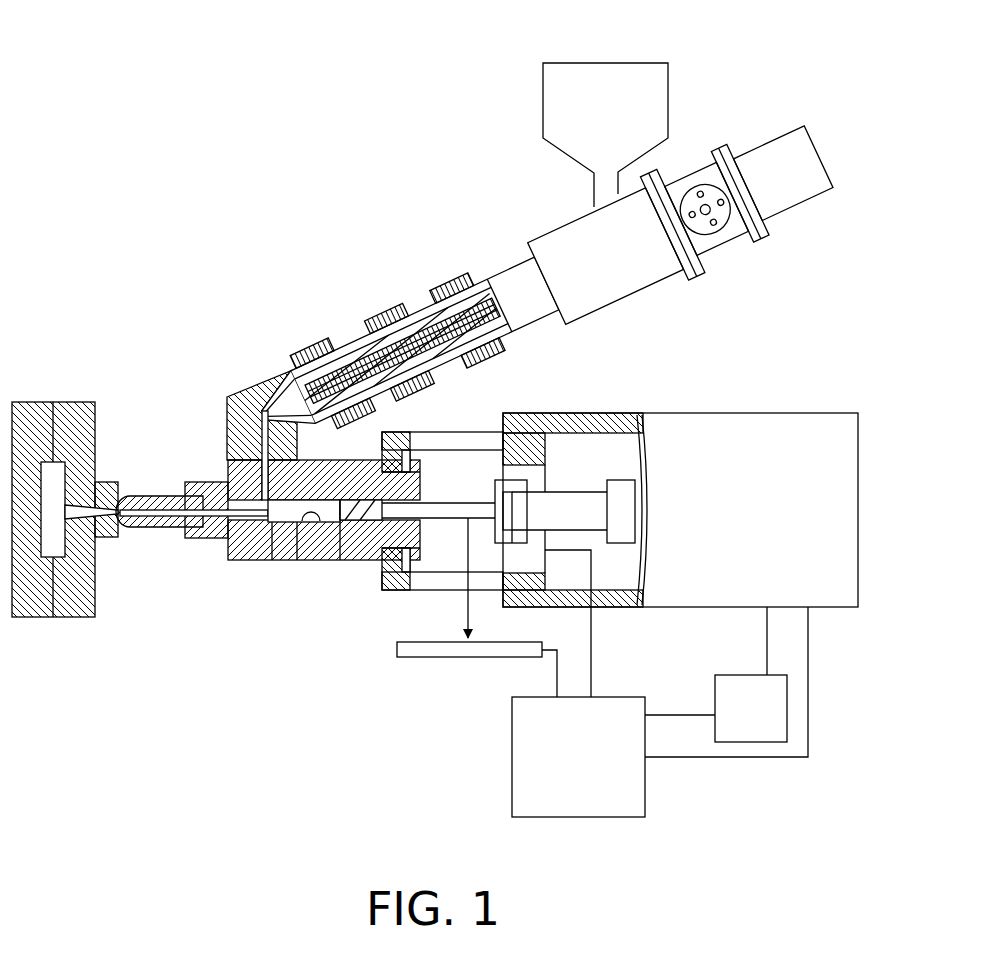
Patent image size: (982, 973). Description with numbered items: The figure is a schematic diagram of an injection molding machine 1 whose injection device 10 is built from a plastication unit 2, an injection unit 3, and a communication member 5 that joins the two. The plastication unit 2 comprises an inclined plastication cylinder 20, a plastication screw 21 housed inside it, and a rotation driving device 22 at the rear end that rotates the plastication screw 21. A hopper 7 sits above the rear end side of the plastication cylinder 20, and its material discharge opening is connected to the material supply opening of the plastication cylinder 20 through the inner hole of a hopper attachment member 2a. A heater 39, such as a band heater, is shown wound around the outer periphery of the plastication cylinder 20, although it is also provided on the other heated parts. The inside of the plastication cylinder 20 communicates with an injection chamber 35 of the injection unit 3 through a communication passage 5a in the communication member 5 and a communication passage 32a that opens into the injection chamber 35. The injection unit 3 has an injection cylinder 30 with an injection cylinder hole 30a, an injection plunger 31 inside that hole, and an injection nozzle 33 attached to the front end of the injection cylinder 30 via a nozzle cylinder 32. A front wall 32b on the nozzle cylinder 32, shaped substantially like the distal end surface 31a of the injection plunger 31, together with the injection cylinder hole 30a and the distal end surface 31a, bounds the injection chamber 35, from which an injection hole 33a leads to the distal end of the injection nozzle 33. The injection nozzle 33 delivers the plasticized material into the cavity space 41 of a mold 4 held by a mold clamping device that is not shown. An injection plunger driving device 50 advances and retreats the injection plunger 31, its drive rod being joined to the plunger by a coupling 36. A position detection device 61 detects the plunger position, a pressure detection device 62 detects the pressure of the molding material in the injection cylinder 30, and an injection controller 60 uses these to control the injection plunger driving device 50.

The injection molding machine 1 is at (803, 75).
The plastication unit 2 is at (408, 300).
The hopper attachment member 2a is at (620, 288).
The injection unit 3 is at (273, 643).
The mold 4 is at (57, 396).
The communication member 5 is at (250, 395).
The communication passage 5a is at (258, 430).
The hopper 7 is at (660, 80).
The injection device 10 is at (190, 308).
The plastication cylinder 20 is at (337, 340).
The plastication screw 21 is at (360, 347).
The rotation driving device 22 is at (795, 197).
The injection cylinder 30 is at (345, 560).
The injection cylinder hole 30a is at (318, 560).
The injection plunger 31 is at (362, 510).
The distal end surface 31a is at (342, 503).
The nozzle cylinder 32 is at (255, 560).
The communication passage 32a is at (245, 487).
The front wall 32b is at (300, 560).
The injection nozzle 33 is at (160, 528).
The injection hole 33a is at (212, 538).
The injection chamber 35 is at (335, 560).
The coupling 36 is at (492, 478).
The heating apparatus 39 is at (450, 284).
The cavity space 41 is at (60, 540).
The injection plunger driving device 50 is at (720, 607).
The injection controller 60 is at (520, 790).
The position detection device 61 is at (428, 658).
The pressure detection device 62 is at (725, 690).